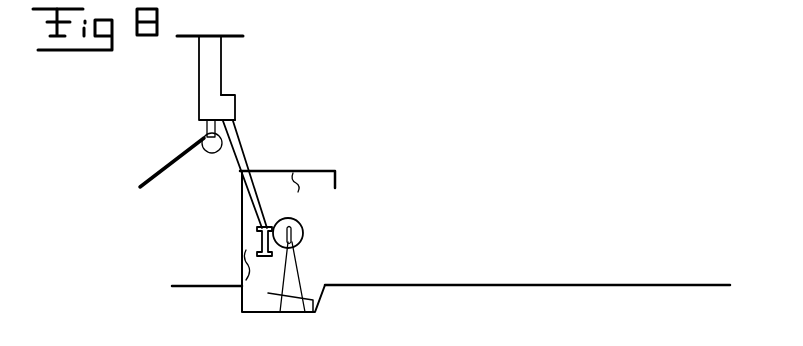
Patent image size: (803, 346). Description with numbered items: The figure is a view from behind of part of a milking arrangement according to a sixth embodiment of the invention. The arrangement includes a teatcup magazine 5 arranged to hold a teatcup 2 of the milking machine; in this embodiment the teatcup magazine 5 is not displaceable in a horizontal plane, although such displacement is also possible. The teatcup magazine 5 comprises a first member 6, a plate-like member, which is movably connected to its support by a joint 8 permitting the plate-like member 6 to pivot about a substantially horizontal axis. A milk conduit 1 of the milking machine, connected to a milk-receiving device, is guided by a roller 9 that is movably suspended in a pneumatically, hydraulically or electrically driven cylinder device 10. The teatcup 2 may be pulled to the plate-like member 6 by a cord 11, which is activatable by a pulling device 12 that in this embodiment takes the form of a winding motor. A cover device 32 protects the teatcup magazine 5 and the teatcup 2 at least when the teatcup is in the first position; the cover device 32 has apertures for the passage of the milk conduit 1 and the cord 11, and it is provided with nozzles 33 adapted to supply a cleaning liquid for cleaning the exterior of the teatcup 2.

The milk conduit 1 is at (148, 173).
The teatcup 2 is at (258, 242).
The teatcup magazine 5 is at (380, 212).
The first member 6 is at (296, 233).
The joint 8 is at (297, 247).
The roller 9 is at (202, 136).
The cylinder device 10 is at (213, 50).
The cord 11 is at (240, 133).
The pulling device 12 is at (228, 96).
The cover device 32 is at (325, 167).
The nozzles 33 is at (286, 242).